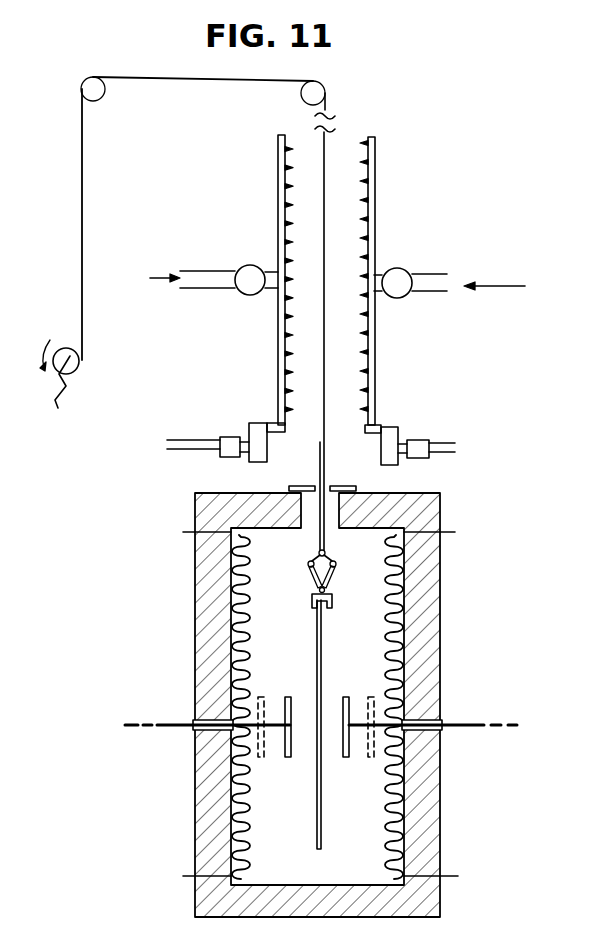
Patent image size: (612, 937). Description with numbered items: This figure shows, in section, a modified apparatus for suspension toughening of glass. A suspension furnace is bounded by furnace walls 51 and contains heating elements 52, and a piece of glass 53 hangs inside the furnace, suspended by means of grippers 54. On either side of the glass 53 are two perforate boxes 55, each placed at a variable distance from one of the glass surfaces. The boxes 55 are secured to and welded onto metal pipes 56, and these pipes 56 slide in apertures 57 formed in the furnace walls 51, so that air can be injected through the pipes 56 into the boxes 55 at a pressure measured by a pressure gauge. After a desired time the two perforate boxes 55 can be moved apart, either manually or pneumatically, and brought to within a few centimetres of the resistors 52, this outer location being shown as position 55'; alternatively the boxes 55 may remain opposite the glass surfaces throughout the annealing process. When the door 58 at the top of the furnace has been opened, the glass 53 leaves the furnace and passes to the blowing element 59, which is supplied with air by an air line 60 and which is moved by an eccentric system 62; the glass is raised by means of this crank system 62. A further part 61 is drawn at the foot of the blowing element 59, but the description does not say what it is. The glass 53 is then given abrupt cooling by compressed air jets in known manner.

The furnace walls 51 is at (432, 620).
The heating elements 52 is at (393, 660).
The piece of glass 53 is at (322, 650).
The grippers 54 is at (325, 558).
The perforate boxes 55 is at (320, 745).
The position of perforate boxes near resistors 55' is at (247, 745).
The metal pipes 56 is at (438, 732).
The apertures 57 is at (428, 722).
The door 58 is at (330, 488).
The blowing element 59 is at (283, 373).
The air line 60 is at (399, 272).
The rack mount 61 is at (258, 428).
The eccentric system 62 is at (83, 228).